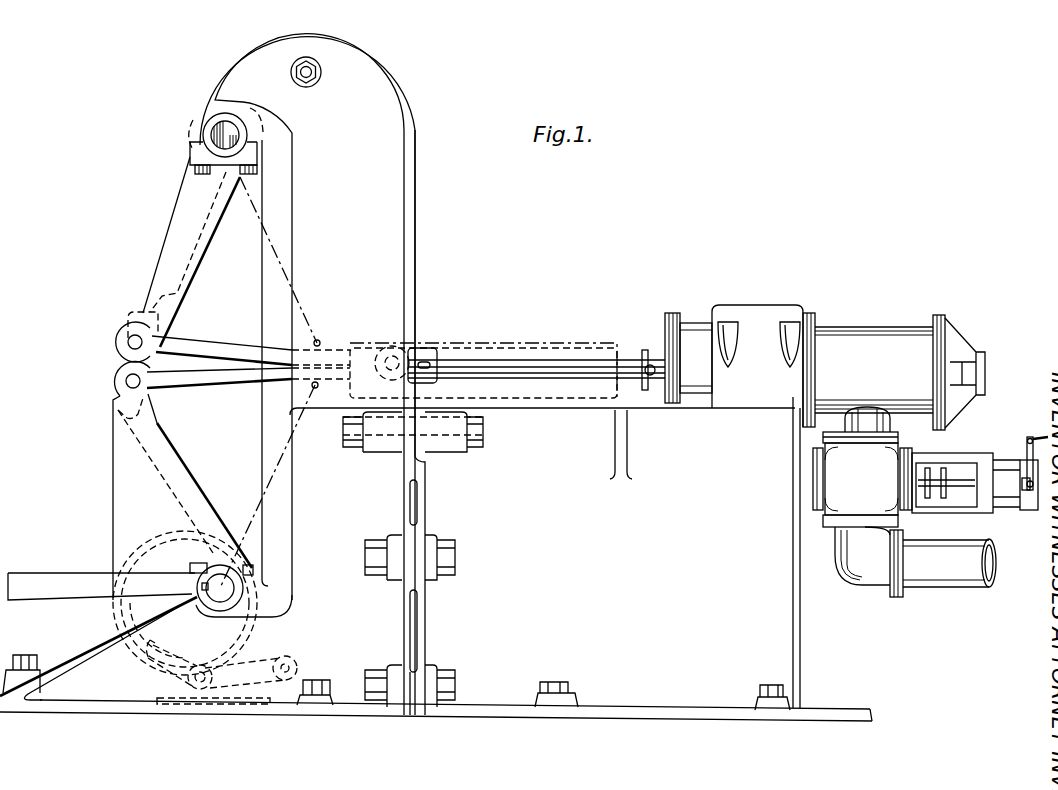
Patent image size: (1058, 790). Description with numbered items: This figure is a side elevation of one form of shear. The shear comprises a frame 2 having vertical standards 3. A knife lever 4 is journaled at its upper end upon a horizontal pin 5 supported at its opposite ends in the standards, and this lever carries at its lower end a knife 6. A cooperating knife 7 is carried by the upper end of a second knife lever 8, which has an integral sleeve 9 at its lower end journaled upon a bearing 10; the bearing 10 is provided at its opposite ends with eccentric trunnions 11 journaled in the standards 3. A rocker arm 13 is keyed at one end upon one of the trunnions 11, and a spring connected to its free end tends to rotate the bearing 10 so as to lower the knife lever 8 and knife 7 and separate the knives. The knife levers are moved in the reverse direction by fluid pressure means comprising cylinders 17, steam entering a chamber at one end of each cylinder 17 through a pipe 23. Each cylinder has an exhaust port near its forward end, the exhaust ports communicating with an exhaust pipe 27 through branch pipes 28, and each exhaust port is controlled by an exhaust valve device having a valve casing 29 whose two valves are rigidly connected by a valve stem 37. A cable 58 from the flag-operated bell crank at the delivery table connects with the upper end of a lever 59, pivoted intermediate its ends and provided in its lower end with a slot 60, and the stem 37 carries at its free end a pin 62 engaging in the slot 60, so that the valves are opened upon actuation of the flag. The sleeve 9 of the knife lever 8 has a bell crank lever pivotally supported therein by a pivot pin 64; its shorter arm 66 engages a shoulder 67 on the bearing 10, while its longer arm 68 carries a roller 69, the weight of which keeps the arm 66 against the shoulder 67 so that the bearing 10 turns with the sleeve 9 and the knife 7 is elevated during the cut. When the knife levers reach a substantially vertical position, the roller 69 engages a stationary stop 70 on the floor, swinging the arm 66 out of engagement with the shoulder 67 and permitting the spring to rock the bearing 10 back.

The frame 2 is at (436, 559).
The vertical standards 3 is at (397, 138).
The knife lever 4 is at (182, 225).
The horizontal pin 5 is at (213, 133).
The knife 6 is at (146, 326).
The cooperating knife 7 is at (127, 404).
The knife lever 8 is at (127, 443).
The sleeve 9 is at (145, 548).
The bearing 10 is at (135, 560).
The eccentric trunnions 11 is at (232, 590).
The rocker arm 13 is at (42, 585).
The fluid pressure cylinder 17 is at (865, 343).
The pipe 23 is at (650, 362).
The exhaust pipe 27 is at (970, 575).
The branch pipe 28 is at (862, 582).
The valve casing 29 is at (862, 467).
The valve stem 37 is at (965, 488).
The cable 58 is at (1037, 437).
The lever 59 is at (1027, 442).
The slot 60 is at (1028, 490).
The pin 62 is at (1025, 484).
The pivot pin 64 is at (213, 678).
The shorter arm 66 is at (182, 667).
The shoulder 67 is at (152, 657).
The longer arm 68 is at (285, 660).
The roller 69 is at (293, 662).
The stationary stop 70 is at (240, 704).